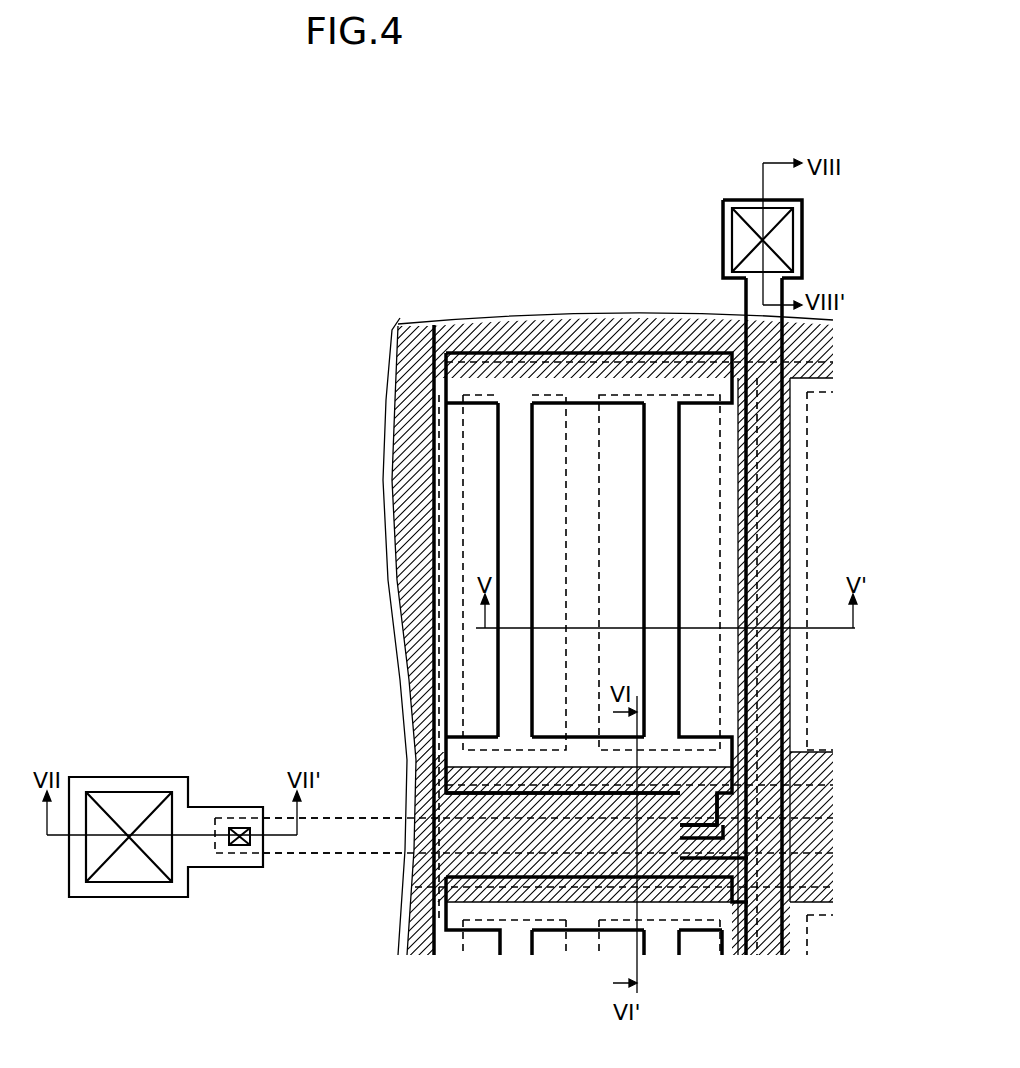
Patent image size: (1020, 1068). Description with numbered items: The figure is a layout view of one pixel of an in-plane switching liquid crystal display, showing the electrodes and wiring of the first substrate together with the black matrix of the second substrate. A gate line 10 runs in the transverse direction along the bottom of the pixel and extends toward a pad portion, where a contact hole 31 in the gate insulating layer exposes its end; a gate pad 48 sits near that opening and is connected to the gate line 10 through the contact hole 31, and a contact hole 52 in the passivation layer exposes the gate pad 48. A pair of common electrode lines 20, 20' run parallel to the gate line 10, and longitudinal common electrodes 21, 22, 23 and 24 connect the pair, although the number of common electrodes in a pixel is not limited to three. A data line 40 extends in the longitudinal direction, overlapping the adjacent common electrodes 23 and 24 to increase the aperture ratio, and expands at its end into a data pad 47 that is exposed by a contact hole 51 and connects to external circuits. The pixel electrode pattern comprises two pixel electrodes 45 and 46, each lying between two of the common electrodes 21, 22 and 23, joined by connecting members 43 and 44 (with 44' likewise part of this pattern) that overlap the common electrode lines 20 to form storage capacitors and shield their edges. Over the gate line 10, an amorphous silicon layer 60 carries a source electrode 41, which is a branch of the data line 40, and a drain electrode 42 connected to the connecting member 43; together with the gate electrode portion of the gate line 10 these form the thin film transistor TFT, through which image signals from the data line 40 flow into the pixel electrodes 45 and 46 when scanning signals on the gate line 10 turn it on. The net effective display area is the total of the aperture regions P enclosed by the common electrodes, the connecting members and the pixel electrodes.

The gate line 10 is at (323, 855).
The common electrode line 20 is at (583, 621).
The common electrode line 20' is at (856, 926).
The common electrode 21 is at (466, 460).
The common electrode 22 is at (564, 460).
The common electrode 23 is at (718, 460).
The common electrode 24 is at (810, 458).
The contact hole 31 is at (240, 846).
The data line 40 is at (745, 302).
The source electrode 41 is at (683, 840).
The drain electrode 42 is at (718, 808).
The connecting member 43 is at (533, 795).
The connecting member 44 is at (589, 548).
The connecting member 44' is at (597, 951).
The pixel electrode 45 is at (497, 536).
The pixel electrode 46 is at (643, 536).
The data pad 47 is at (803, 238).
The gate pad 48 is at (138, 897).
The contact hole 51 is at (723, 238).
The contact hole 52 is at (137, 792).
The amorphous silicon layer 60 is at (748, 858).
The aperture region P is at (592, 474).
The thin film transistor TFT is at (677, 832).